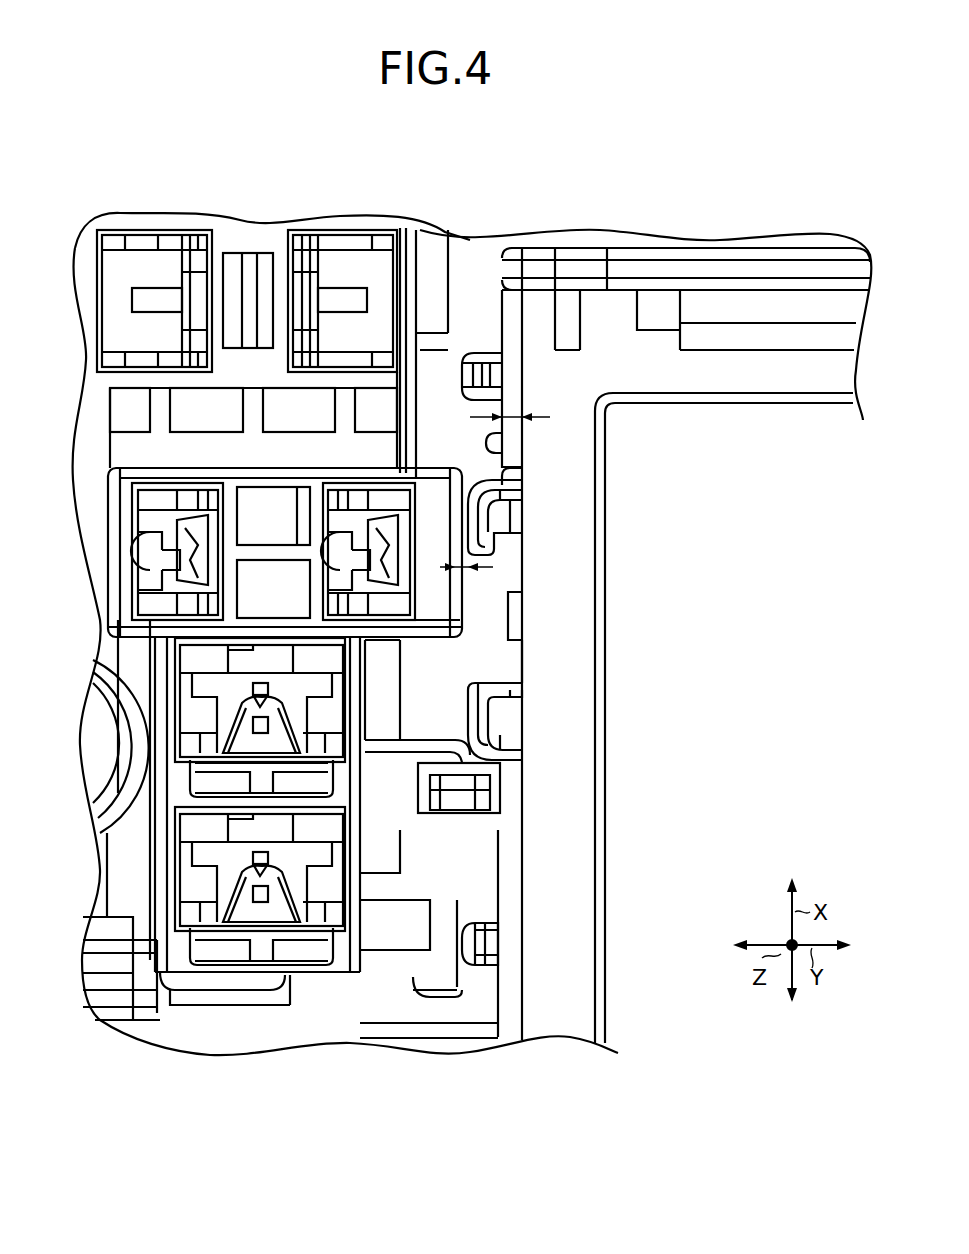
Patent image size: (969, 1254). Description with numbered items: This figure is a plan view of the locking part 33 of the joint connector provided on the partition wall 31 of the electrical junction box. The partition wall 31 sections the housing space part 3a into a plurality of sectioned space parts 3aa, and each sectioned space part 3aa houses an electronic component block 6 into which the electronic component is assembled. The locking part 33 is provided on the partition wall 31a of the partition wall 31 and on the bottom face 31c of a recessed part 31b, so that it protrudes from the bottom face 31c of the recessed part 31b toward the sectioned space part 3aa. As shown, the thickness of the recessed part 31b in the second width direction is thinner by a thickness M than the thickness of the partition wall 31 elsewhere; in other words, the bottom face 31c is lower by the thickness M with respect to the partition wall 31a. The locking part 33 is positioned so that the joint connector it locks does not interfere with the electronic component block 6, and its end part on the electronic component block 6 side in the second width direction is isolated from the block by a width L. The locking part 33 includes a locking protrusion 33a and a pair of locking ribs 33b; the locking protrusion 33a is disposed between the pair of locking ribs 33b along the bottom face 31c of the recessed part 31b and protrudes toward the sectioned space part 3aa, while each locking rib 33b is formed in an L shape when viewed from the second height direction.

The housing space part 3a is at (667, 595).
The sectioned space part 3aa is at (470, 280).
The electronic component block 6 is at (295, 408).
The partition wall 31 is at (573, 468).
The partition wall 31a is at (503, 455).
The recessed part 31b is at (467, 660).
The bottom face 31c is at (503, 497).
The locking part 33 is at (604, 620).
The locking protrusion 33a is at (515, 620).
The locking rib 33b is at (473, 530).
The thickness M is at (537, 413).
The width L is at (483, 585).